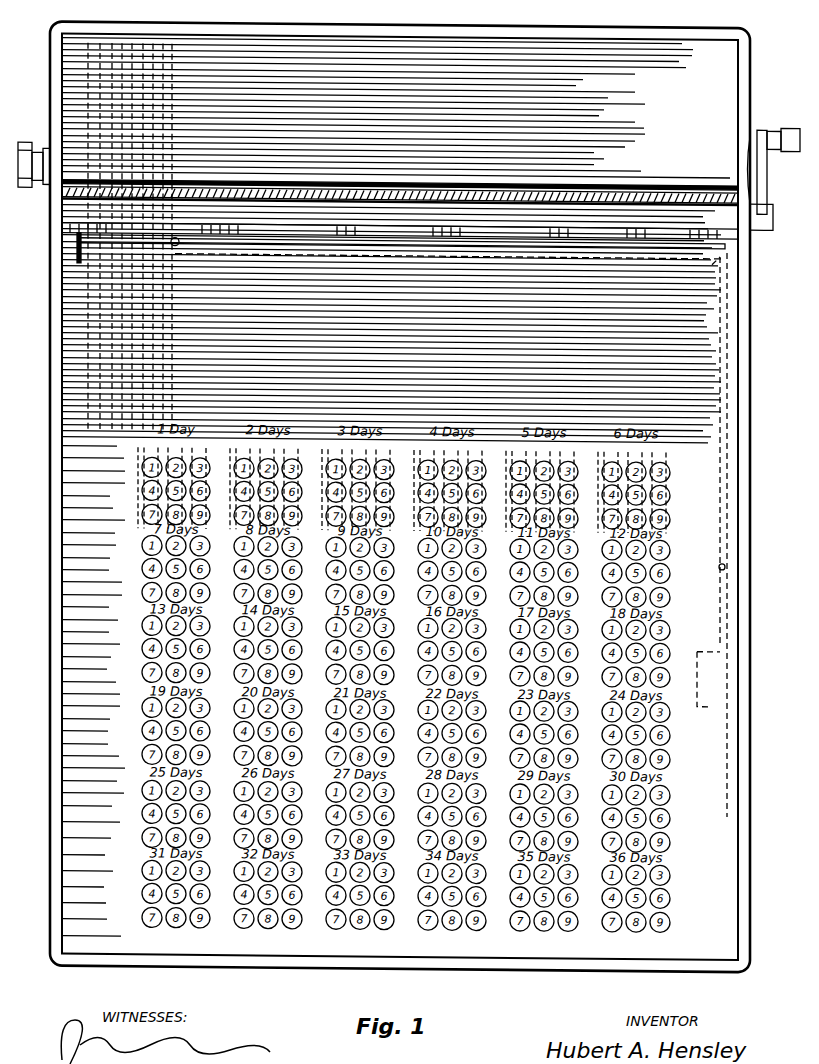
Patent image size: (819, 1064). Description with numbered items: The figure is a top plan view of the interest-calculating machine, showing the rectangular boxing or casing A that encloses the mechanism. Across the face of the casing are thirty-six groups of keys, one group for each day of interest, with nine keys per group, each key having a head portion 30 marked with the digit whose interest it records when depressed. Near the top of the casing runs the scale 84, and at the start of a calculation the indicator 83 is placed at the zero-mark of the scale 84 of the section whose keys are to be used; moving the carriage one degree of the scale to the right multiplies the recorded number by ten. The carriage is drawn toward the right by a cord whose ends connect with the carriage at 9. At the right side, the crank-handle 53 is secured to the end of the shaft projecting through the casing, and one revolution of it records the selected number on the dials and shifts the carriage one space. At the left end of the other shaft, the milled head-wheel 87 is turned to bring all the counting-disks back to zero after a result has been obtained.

The cord connection 9 is at (176, 246).
The head portion of key 30 is at (671, 514).
The crank-handle 53 is at (786, 147).
The indicator 83 is at (178, 243).
The scale 84 is at (210, 184).
The milled head-wheel 87 is at (26, 142).
The casing A is at (454, 372).